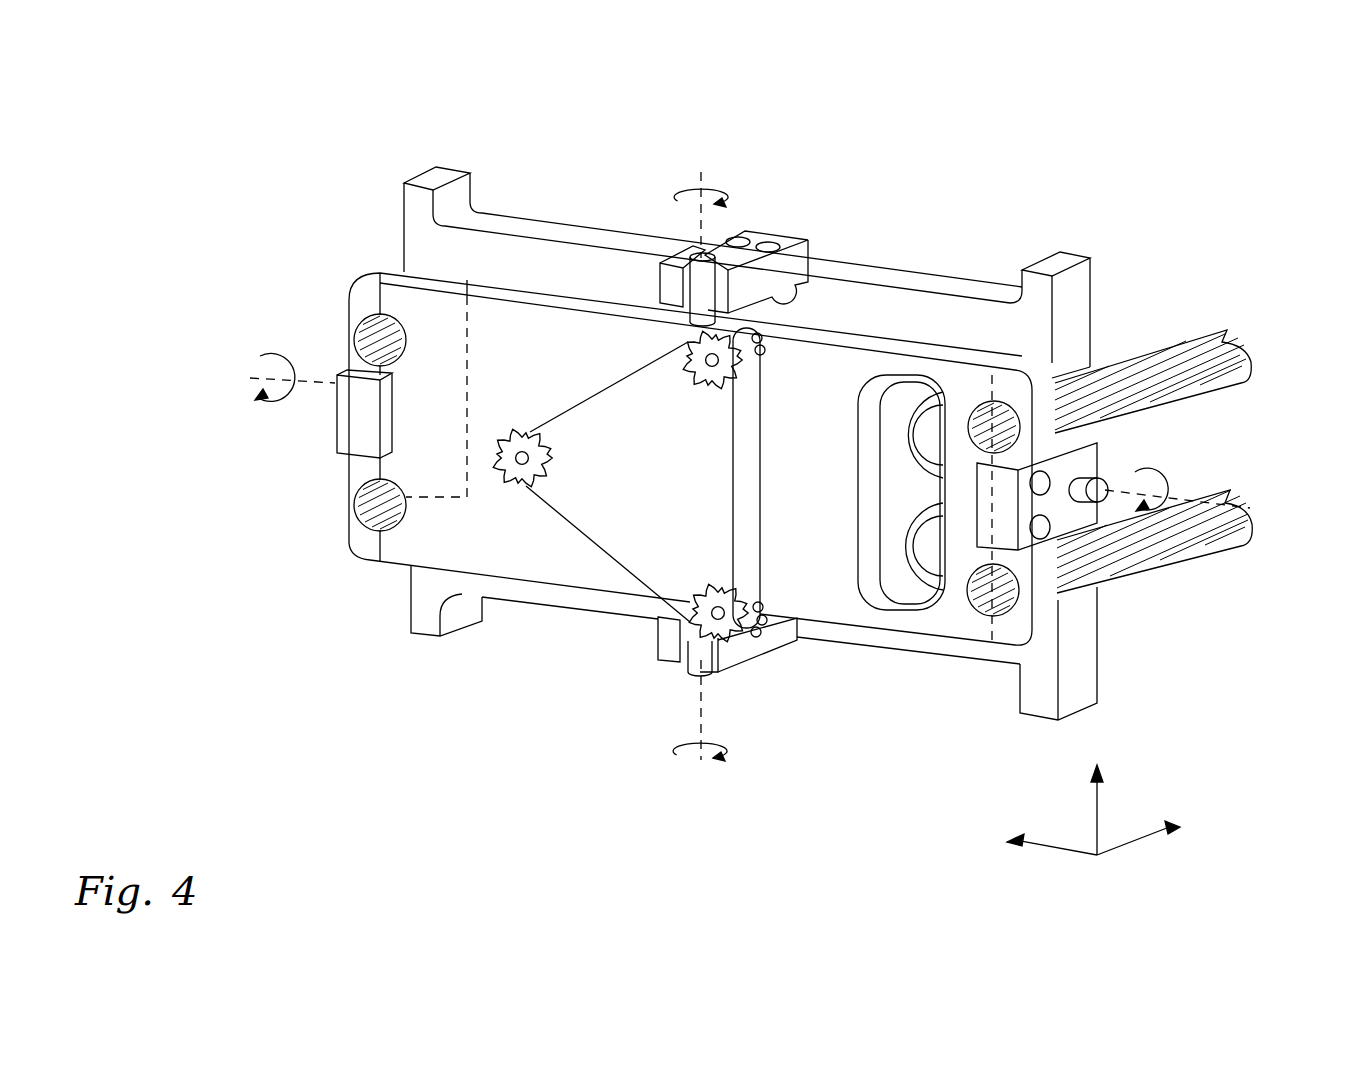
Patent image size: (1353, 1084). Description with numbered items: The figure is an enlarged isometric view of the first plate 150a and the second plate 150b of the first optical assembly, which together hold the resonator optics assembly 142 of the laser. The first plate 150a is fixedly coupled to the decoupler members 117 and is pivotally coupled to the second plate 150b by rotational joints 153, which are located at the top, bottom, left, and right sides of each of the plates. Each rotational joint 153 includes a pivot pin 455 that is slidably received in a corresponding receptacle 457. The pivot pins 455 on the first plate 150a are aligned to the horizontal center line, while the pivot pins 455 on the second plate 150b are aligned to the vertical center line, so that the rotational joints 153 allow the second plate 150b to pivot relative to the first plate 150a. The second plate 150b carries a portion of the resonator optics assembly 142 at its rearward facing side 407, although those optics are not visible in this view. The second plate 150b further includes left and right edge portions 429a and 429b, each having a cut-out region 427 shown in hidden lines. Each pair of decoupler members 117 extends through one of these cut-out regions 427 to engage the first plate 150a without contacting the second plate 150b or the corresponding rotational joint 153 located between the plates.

The resonator optics assembly 142 is at (288, 128).
The rearward facing side 407 is at (947, 267).
The left edge portion 429a is at (1078, 281).
The right edge portion 429b is at (407, 241).
The first plate 150a is at (373, 300).
The second plate 150b is at (407, 220).
The rotational joint 153 is at (762, 240).
The cut-out region 427 is at (477, 372).
The pivot pin 455 is at (712, 250).
The receptacle 457 is at (675, 272).
The decoupler member 117 is at (1152, 377).